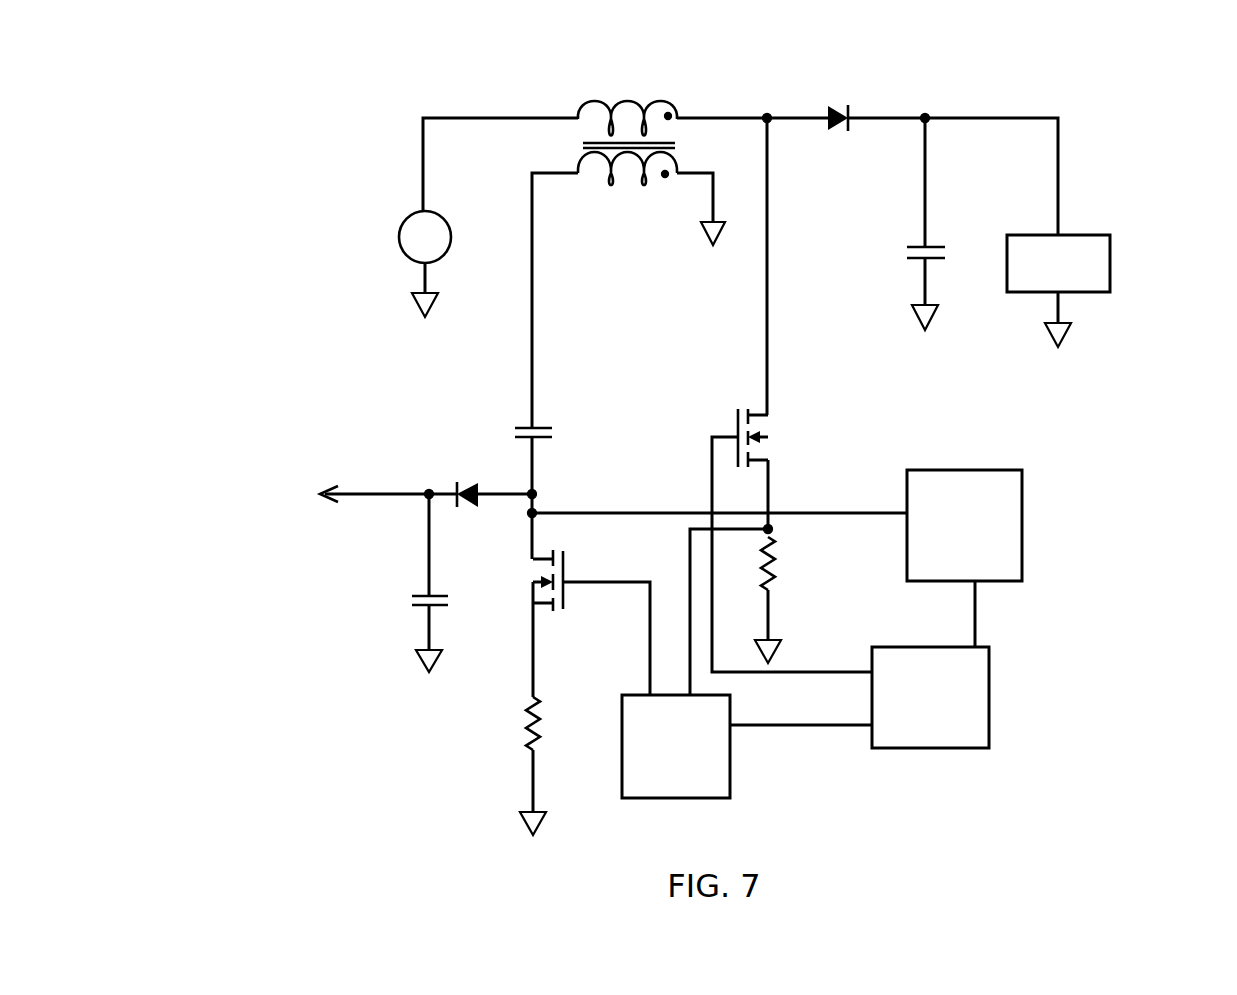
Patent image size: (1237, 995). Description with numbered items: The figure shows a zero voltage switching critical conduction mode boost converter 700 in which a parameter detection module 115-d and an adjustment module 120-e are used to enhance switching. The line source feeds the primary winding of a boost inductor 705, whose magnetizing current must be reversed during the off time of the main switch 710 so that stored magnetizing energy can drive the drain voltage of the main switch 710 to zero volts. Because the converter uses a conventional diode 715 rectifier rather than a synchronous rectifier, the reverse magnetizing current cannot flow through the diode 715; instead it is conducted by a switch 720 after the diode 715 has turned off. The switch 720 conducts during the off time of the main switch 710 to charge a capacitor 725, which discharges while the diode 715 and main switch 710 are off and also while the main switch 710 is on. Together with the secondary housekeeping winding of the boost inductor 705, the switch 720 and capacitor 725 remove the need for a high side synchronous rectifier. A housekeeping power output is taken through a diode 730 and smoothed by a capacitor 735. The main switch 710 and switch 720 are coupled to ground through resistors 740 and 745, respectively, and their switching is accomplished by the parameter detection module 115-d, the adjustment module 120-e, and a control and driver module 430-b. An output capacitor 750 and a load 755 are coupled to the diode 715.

The zero voltage switching critical conduction mode boost converter 700 is at (1053, 808).
The boost inductor 705 is at (627, 112).
The main switch 710 is at (740, 412).
The diode 715 is at (850, 112).
The switch 720 is at (563, 573).
The capacitor 725 is at (547, 423).
The housekeeping diode 730 is at (463, 485).
The housekeeping capacitor 735 is at (452, 598).
The resistor 740 is at (537, 702).
The resistor 745 is at (773, 555).
The output capacitor 750 is at (945, 250).
The load 755 is at (1088, 233).
The parameter detection module 115-d is at (925, 468).
The adjustment module 120-e is at (917, 640).
The control and driver module 430-b is at (622, 720).